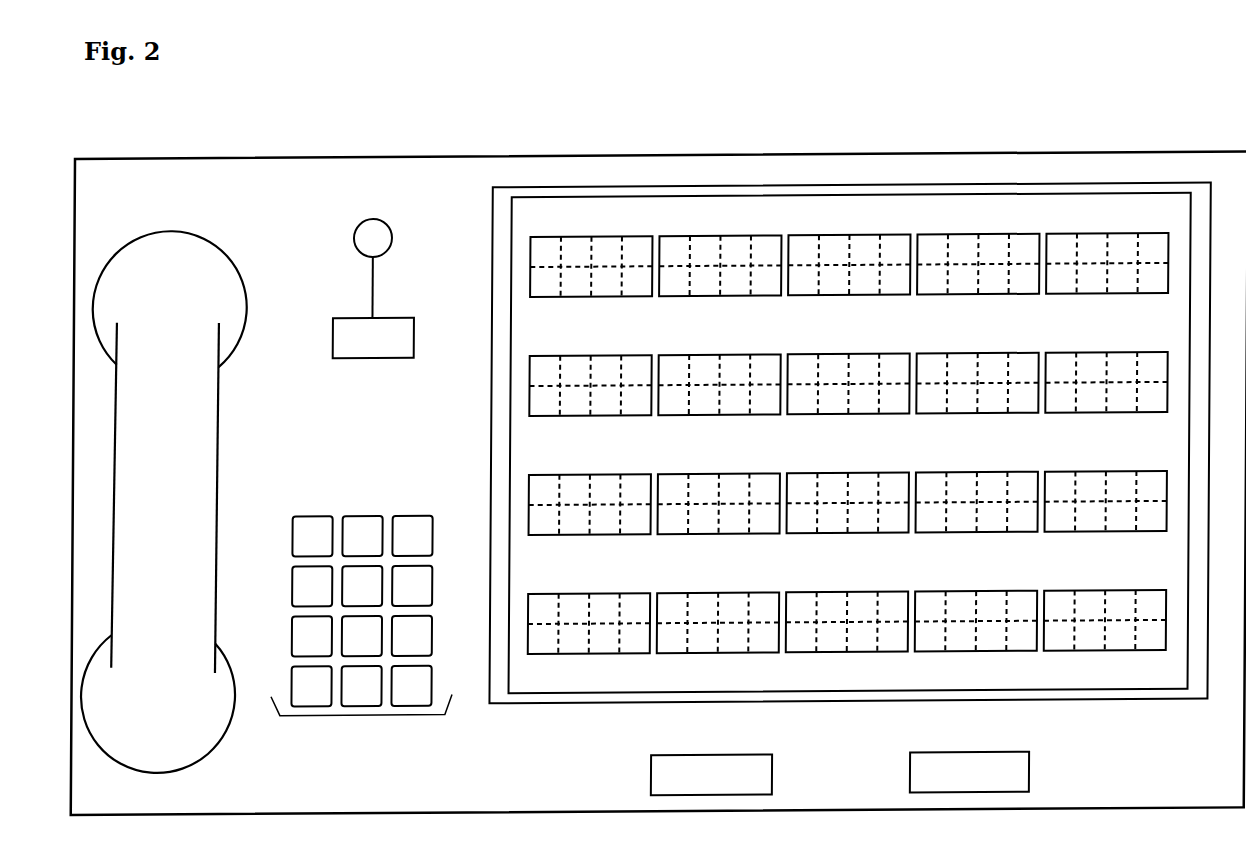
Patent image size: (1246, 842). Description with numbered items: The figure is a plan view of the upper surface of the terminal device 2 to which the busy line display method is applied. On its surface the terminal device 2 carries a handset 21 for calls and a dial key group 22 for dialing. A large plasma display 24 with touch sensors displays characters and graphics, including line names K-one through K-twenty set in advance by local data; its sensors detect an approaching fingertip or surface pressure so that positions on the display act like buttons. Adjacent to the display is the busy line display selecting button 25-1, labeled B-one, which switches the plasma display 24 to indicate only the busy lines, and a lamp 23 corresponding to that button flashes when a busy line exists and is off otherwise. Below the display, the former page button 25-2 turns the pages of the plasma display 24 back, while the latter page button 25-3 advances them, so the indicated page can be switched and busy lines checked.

The terminal device 2 is at (992, 159).
The handset 21 is at (227, 253).
The dial key group 22 is at (364, 717).
The lamp 23 is at (394, 237).
The plasma display with touch sensors 24 is at (493, 409).
The busy line display selecting button 25-1 is at (415, 335).
The former page button 25-2 is at (655, 781).
The latter page button 25-3 is at (1033, 777).